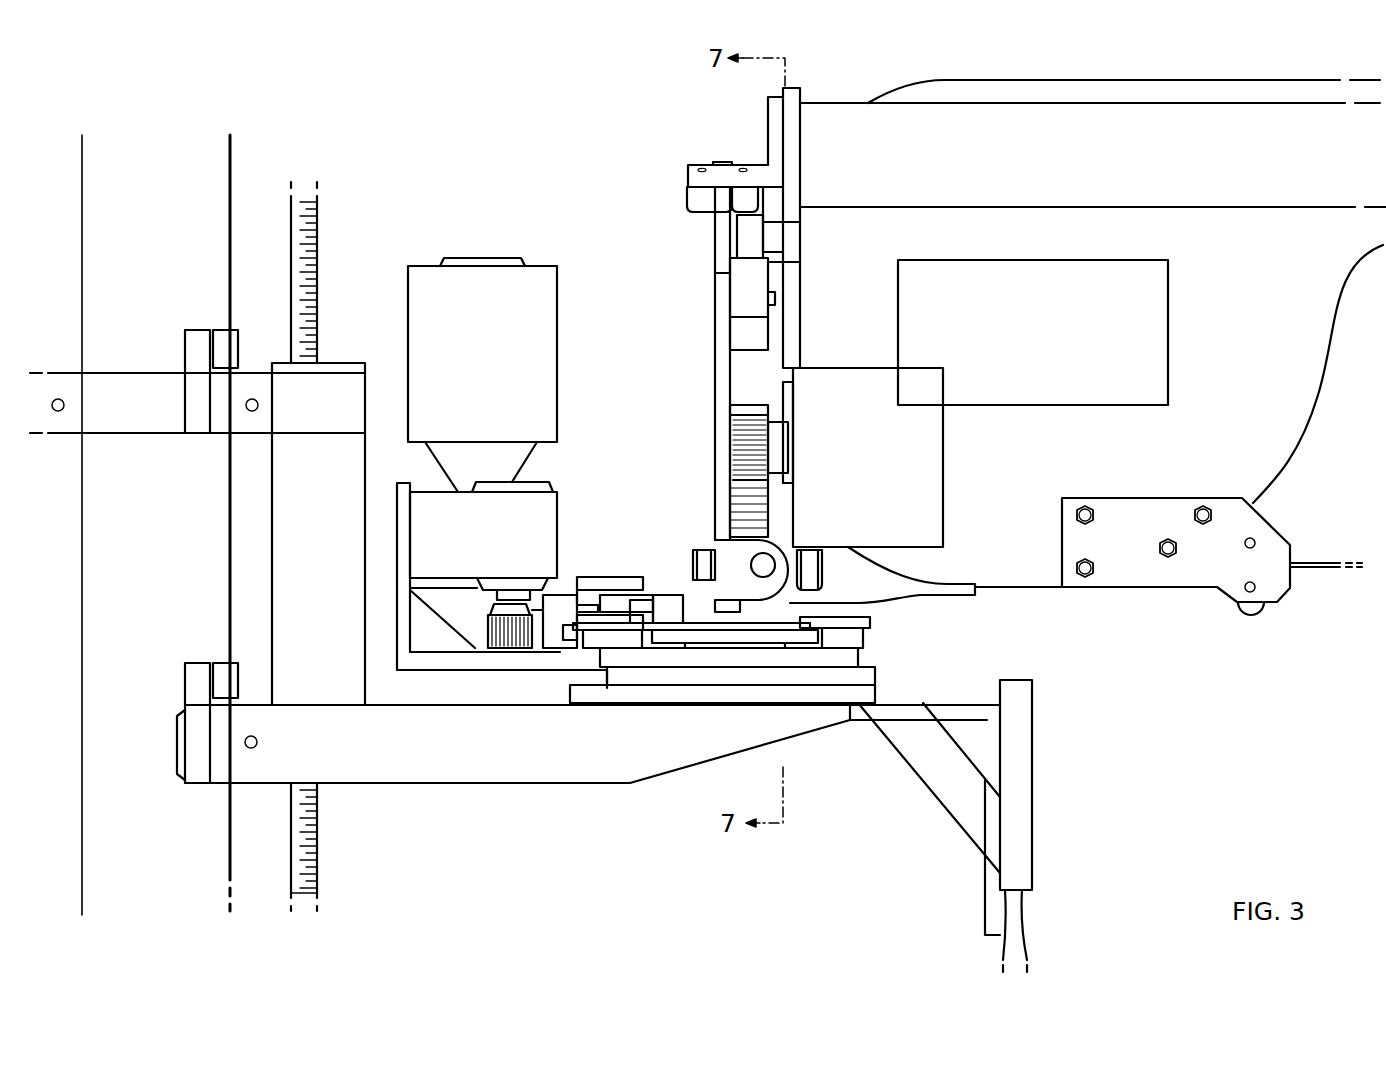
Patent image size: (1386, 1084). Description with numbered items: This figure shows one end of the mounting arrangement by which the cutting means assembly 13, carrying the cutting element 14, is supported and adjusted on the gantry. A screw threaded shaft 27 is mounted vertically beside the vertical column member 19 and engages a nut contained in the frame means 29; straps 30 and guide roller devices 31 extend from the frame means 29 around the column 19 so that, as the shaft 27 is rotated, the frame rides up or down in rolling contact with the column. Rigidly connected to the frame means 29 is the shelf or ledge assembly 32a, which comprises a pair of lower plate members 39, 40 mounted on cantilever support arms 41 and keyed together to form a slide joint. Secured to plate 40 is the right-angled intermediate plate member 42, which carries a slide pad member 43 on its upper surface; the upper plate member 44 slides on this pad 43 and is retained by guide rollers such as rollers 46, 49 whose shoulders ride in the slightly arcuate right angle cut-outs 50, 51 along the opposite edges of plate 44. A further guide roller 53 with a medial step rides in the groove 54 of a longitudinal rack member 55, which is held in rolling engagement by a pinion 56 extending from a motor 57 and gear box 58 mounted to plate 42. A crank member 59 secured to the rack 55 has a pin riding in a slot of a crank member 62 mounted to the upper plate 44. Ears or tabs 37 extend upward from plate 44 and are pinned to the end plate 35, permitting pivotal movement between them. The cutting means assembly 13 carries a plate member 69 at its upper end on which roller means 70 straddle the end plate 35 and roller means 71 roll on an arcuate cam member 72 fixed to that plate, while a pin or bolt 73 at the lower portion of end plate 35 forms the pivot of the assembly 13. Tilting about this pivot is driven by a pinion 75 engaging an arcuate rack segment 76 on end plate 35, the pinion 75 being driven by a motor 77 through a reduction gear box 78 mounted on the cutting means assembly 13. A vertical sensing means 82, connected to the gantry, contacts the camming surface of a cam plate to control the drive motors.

The cutting means assembly 13 is at (1150, 600).
The cutting element 14 is at (1314, 570).
The vertical column member 19 is at (232, 190).
The screw threaded shaft 27 is at (320, 240).
The frame means 29 is at (338, 363).
The strap 30 is at (236, 437).
The guide roller device 31 is at (236, 330).
The shelf or ledge assembly 32a is at (592, 792).
The end plate 35 is at (713, 370).
The ear or tab 37 is at (742, 598).
The lower plate member 39 is at (878, 693).
The lower plate member 40 is at (878, 677).
The cantilever support arm 41 is at (588, 743).
The right-angled intermediate plate member 42 is at (463, 674).
The slide pad member 43 is at (708, 648).
The upper plate member 44 is at (662, 660).
The guide roller 46 is at (872, 623).
The guide roller 49 is at (583, 648).
The right angle cut-out 50 is at (822, 625).
The right angle cut-out 51 is at (664, 612).
The guide roller 53 is at (580, 605).
The slide or groove 54 is at (563, 633).
The rack member 55 is at (555, 612).
The pinion 56 is at (488, 622).
The motor 57 is at (558, 306).
The gear box 58 is at (558, 497).
The crank member 59 is at (615, 577).
The crank member 62 is at (645, 597).
The plate member 69 is at (803, 88).
The roller means 70 is at (697, 208).
The roller means 71 is at (737, 250).
The arcuate cam member 72 is at (730, 328).
The pin or bolt 73 is at (697, 548).
The pinion 75 is at (790, 425).
The arcuate rack segment 76 is at (750, 405).
The motor 77 is at (1170, 318).
The reduction gear box 78 is at (868, 457).
The vertical sensing means 82 is at (1046, 909).